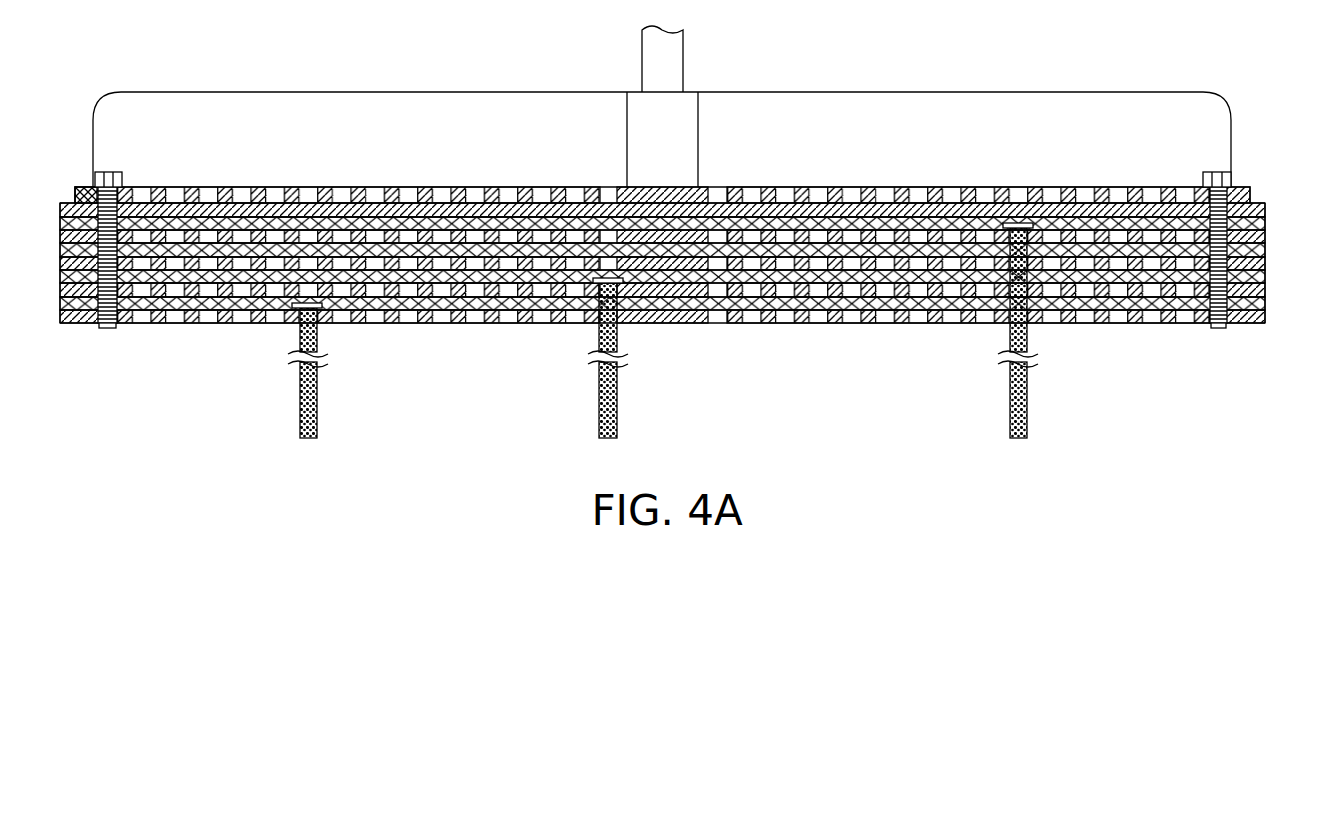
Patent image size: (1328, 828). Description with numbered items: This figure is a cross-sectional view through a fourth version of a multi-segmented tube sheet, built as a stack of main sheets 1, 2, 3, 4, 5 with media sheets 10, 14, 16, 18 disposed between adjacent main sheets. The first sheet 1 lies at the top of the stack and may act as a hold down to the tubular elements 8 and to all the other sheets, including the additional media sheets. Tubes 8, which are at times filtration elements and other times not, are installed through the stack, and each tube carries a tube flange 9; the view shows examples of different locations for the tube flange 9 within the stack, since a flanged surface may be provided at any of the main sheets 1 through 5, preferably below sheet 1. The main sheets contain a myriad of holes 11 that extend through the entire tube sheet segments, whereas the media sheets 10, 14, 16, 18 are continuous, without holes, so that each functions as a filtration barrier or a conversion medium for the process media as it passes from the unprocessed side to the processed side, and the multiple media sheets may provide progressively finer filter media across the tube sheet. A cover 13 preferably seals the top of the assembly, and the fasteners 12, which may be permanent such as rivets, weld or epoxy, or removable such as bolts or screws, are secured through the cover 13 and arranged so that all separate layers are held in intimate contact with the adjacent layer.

The first sheet 1 is at (67, 203).
The sheet 2 is at (1266, 225).
The sheet 3 is at (1266, 262).
The sheet 4 is at (1266, 307).
The sheet 5 is at (1247, 323).
The tube 8 is at (317, 392).
The tube flange 9 is at (288, 300).
The media sheet 10 is at (1260, 222).
The holes 11 is at (373, 192).
The fastener 12 is at (108, 177).
The cover 13 is at (82, 181).
The media sheet 14 is at (1266, 241).
The media sheet 16 is at (1266, 284).
The media sheet 18 is at (1266, 320).